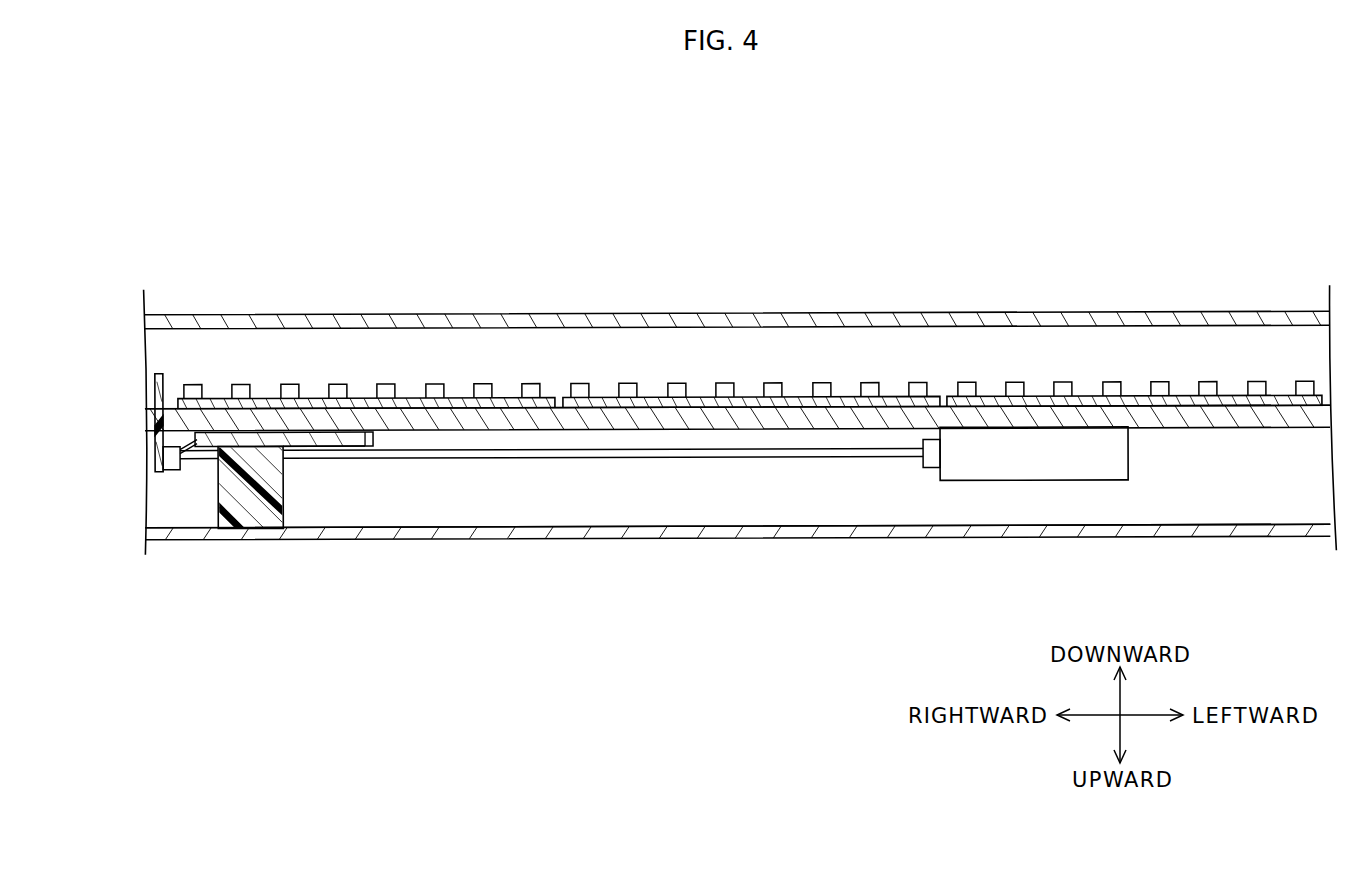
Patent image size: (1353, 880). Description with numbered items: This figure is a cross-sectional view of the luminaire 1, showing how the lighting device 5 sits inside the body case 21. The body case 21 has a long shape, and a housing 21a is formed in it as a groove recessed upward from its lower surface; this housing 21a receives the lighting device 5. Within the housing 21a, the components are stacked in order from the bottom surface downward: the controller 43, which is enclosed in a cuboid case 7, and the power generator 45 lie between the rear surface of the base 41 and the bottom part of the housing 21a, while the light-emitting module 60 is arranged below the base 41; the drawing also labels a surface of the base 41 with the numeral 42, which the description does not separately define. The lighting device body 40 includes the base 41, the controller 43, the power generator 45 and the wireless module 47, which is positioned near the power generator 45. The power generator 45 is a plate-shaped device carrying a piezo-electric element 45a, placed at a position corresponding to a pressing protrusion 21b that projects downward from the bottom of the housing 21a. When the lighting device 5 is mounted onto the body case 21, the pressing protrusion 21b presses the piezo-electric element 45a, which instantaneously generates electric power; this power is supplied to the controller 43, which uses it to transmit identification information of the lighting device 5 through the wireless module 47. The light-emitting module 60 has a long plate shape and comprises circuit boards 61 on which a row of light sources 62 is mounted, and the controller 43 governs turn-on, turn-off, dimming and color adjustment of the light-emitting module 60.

The luminaire 1 is at (1209, 271).
The lighting device 5 is at (1078, 329).
The case 7 is at (1025, 474).
The body case 21 is at (984, 531).
The housing 21a is at (1171, 526).
The pressing protrusion 21b is at (246, 521).
The lighting device body 40 is at (885, 521).
The base 41 is at (1254, 412).
The light guide plate surface 42 is at (1165, 405).
The controller 43 is at (1021, 478).
The power generator 45 is at (284, 466).
The piezo-electric element 45a is at (306, 442).
The wireless module 47 is at (150, 384).
The light-emitting module 60 is at (750, 374).
The circuit board 61 is at (1229, 397).
The light source 62 is at (1202, 388).